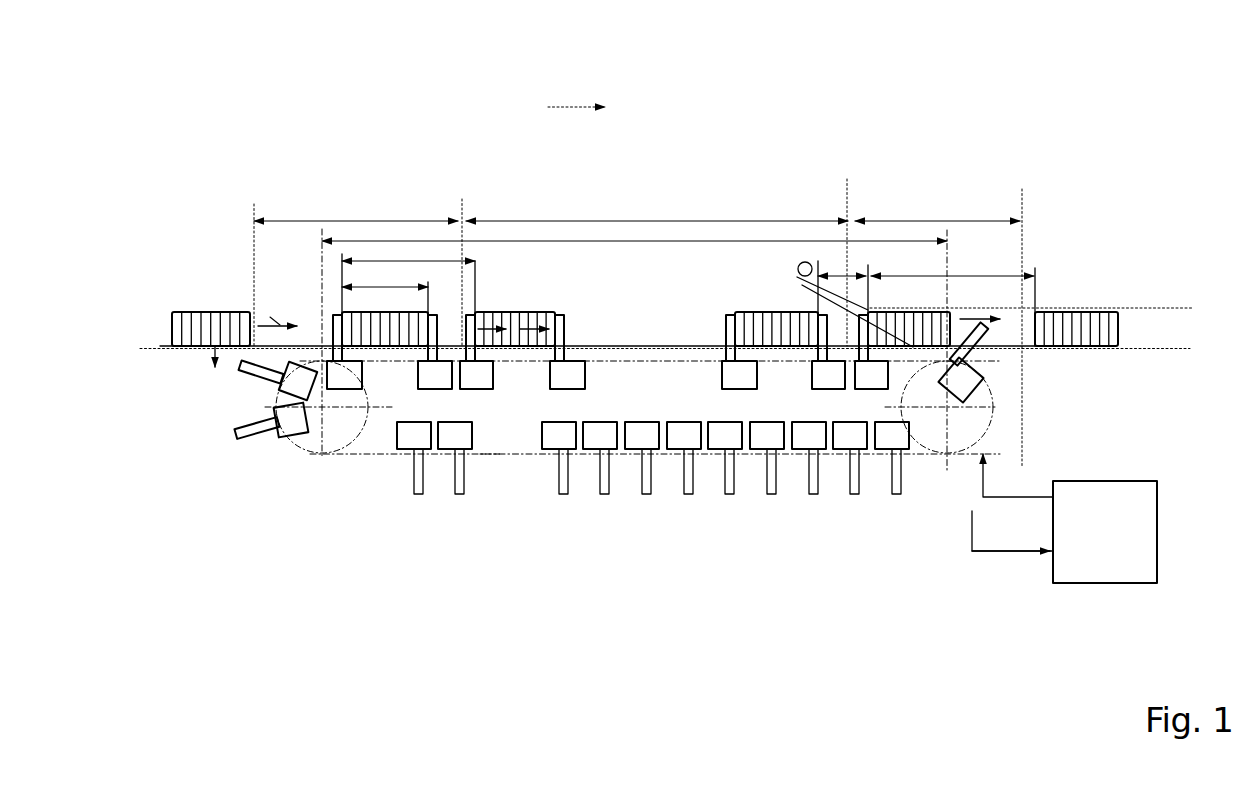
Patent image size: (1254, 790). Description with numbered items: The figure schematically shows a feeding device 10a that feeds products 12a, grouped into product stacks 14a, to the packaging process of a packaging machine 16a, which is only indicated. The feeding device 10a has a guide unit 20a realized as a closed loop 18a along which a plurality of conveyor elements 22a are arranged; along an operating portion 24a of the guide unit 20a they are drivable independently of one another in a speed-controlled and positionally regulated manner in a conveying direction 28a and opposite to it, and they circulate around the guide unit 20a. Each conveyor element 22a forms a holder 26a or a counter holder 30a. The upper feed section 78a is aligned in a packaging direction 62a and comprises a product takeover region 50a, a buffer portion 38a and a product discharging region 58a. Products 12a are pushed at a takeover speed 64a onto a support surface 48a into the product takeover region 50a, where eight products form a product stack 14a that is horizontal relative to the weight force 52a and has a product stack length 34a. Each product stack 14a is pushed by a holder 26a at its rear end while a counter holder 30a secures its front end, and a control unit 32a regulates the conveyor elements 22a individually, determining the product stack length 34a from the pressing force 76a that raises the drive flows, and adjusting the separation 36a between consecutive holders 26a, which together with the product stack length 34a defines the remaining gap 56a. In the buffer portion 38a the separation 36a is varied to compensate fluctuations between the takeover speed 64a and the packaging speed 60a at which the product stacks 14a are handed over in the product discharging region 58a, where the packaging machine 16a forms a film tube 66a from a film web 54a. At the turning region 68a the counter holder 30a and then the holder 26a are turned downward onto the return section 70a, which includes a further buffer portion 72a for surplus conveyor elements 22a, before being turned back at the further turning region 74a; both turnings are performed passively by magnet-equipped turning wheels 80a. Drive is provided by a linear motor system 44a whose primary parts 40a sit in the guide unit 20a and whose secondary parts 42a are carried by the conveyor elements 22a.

The feeding device 10a is at (134, 182).
The products 12a is at (178, 317).
The product stacks 14a is at (203, 296).
The packaging machine 16a is at (1106, 366).
The closed loop 18a is at (957, 467).
The guide unit 20a is at (610, 347).
The conveyor elements 22a is at (585, 362).
The operating portion 24a is at (333, 322).
The holder 26a is at (282, 338).
The conveying direction 28a is at (585, 107).
The counter holder 30a is at (437, 320).
The control unit 32a is at (1092, 558).
The product stack length 34a is at (402, 260).
The separation 36a is at (365, 312).
The buffer portion 38a is at (487, 313).
The primary parts 40a is at (655, 362).
The secondary parts 42a is at (727, 313).
The linear motor system 44a is at (630, 482).
The support surface 48a is at (650, 276).
The product takeover region 50a is at (278, 210).
The weight force 52a is at (210, 352).
The film web 54a is at (800, 264).
The remaining gap 56a is at (846, 272).
The product discharging region 58a is at (1013, 221).
The packaging speed 60a is at (982, 318).
The packaging direction 62a is at (963, 312).
The takeover speed 64a is at (277, 323).
The film tube 66a is at (1098, 312).
The turning region 68a is at (993, 405).
The return section 70a is at (491, 457).
The further buffer portion 72a is at (691, 507).
The further turning region 74a is at (290, 447).
The pressing force 76a is at (530, 328).
The feed section 78a is at (558, 318).
The turning wheels 80a is at (337, 455).